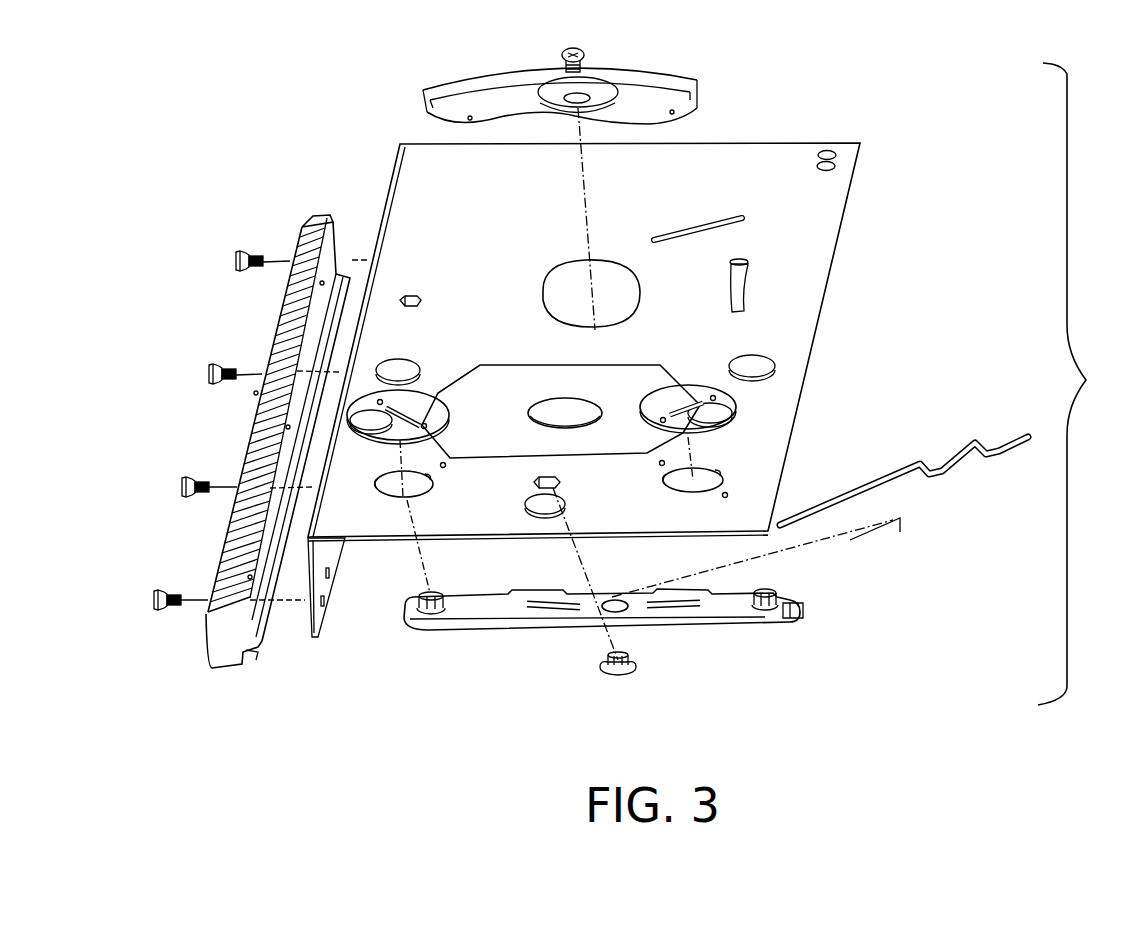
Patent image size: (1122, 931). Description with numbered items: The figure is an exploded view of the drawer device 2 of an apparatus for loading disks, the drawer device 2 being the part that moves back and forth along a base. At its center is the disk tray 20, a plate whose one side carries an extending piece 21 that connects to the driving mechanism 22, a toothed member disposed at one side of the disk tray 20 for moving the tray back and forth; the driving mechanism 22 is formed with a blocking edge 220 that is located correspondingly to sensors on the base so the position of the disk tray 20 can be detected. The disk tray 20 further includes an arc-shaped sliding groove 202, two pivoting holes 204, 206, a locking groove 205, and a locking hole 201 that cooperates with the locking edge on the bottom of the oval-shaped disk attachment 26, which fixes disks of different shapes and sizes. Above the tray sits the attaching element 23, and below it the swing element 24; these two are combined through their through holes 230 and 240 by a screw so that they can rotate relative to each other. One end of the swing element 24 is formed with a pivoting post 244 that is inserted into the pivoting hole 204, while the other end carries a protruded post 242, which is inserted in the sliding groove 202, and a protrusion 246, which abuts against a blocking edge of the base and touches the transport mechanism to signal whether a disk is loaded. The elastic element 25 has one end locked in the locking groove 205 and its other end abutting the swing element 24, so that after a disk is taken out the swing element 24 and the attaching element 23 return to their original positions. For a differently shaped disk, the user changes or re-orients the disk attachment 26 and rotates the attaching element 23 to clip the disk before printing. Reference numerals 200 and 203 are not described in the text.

The drawer device 2 is at (1072, 384).
The disk tray 20 is at (812, 306).
The central hole 200 is at (573, 410).
The locking hole 201 is at (723, 477).
The arc-shaped sliding groove 202 is at (830, 262).
The through hole 203 is at (570, 280).
The pivoting hole 204 is at (410, 296).
The locking groove 205 is at (698, 229).
The pivoting hole 206 is at (559, 487).
The extending piece 21 is at (318, 636).
The driving mechanism 22 is at (300, 227).
The blocking edge 220 is at (252, 662).
The attaching element 23 is at (697, 80).
The through hole 230 is at (582, 92).
The swing element 24 is at (547, 620).
The through hole 240 is at (610, 600).
The protruded post 242 is at (753, 605).
The pivoting post 244 is at (422, 614).
The protrusion 246 is at (800, 616).
The elastic element 25 is at (953, 445).
The disk attachment 26 is at (648, 397).